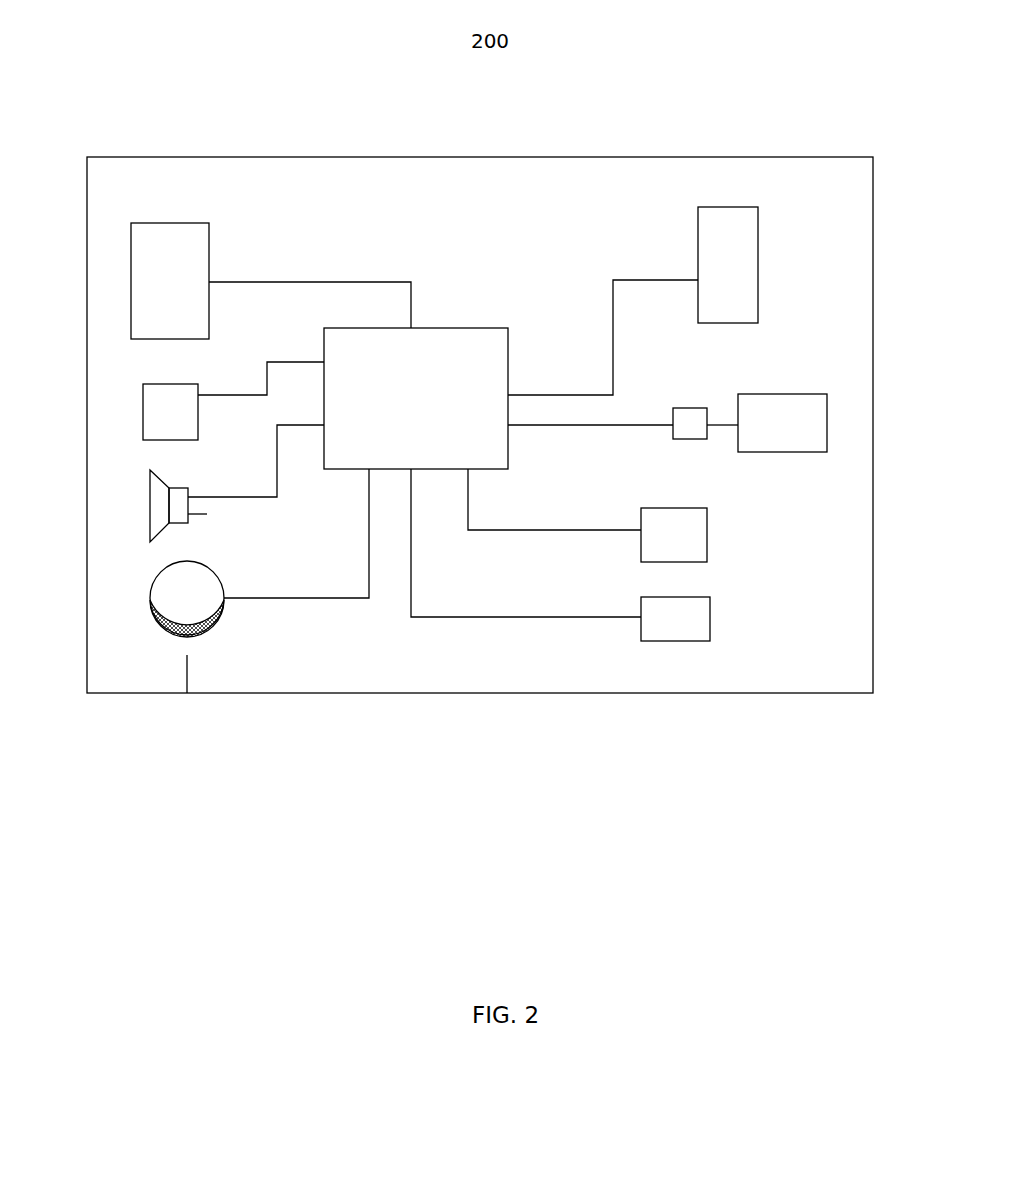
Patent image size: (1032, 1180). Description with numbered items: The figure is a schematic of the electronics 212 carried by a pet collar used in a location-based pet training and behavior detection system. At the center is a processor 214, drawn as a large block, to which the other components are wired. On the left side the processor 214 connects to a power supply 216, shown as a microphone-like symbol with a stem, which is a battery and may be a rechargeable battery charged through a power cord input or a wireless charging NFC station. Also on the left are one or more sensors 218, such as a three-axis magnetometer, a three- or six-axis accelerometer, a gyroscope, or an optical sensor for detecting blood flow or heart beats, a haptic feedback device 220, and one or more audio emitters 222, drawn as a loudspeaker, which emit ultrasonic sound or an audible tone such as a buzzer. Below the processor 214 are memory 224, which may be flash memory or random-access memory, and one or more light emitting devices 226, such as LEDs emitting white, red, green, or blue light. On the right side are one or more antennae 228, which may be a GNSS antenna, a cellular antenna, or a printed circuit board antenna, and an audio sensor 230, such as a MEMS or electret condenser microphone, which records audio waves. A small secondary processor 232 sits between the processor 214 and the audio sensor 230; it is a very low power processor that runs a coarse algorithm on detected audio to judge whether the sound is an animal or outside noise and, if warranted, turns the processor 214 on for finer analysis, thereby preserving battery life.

The electronics 212 is at (265, 157).
The processor 214 is at (435, 328).
The power supply 216 is at (156, 642).
The sensors 218 is at (141, 223).
The haptic feedback device 220 is at (143, 410).
The audio emitters 222 is at (150, 497).
The memory 224 is at (707, 521).
The light emitting devices 226 is at (675, 641).
The antennae 228 is at (758, 244).
The audio sensor 230 is at (827, 413).
The secondary processor 232 is at (700, 405).